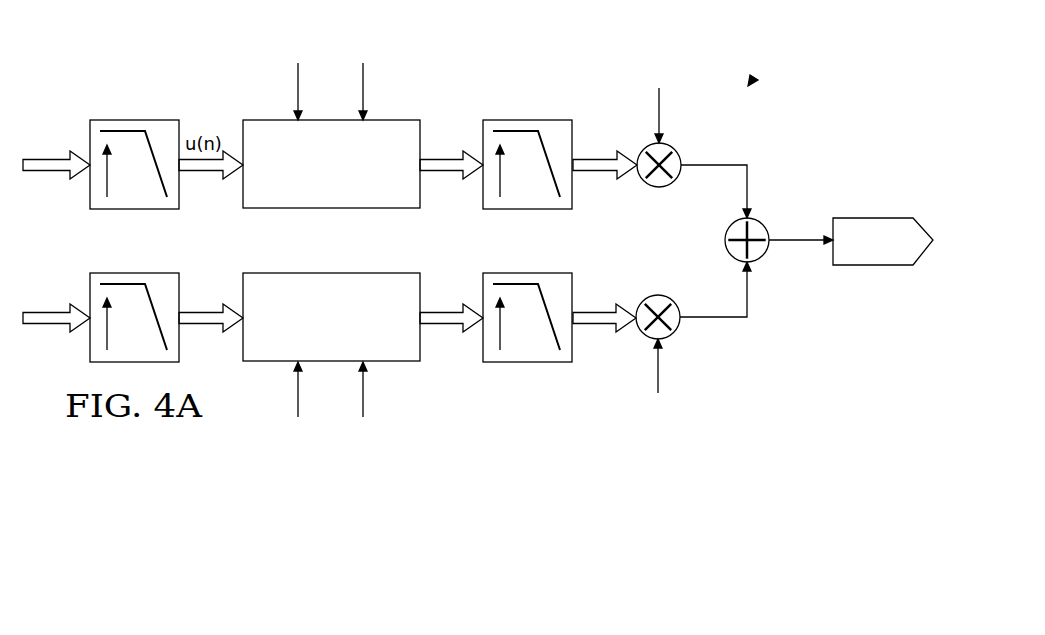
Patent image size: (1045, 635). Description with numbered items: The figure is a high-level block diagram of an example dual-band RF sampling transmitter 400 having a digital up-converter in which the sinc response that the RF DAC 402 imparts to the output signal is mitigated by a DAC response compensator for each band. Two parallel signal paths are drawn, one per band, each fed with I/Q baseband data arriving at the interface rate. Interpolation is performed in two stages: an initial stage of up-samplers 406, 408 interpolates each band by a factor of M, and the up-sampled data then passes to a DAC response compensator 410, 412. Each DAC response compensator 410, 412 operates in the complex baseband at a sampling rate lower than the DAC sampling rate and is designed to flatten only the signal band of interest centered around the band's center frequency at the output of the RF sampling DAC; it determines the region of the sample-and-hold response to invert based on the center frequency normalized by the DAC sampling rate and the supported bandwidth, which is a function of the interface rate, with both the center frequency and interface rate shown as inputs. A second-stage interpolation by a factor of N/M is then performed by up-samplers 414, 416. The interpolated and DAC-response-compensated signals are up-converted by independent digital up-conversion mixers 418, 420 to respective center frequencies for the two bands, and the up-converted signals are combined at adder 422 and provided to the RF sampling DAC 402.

The dual-band RF sampling transmitter 400 is at (752, 82).
The RF DAC 402 is at (878, 218).
The up-sampler 406 is at (132, 119).
The up-sampler 408 is at (84, 350).
The DAC response compensator 410 is at (309, 209).
The DAC response compensator 412 is at (355, 272).
The up-sampler 414 is at (528, 119).
The up-sampler 416 is at (528, 364).
The digital up-conversion mixer 418 is at (650, 186).
The digital up-conversion mixer 420 is at (663, 296).
The adder 422 is at (765, 222).